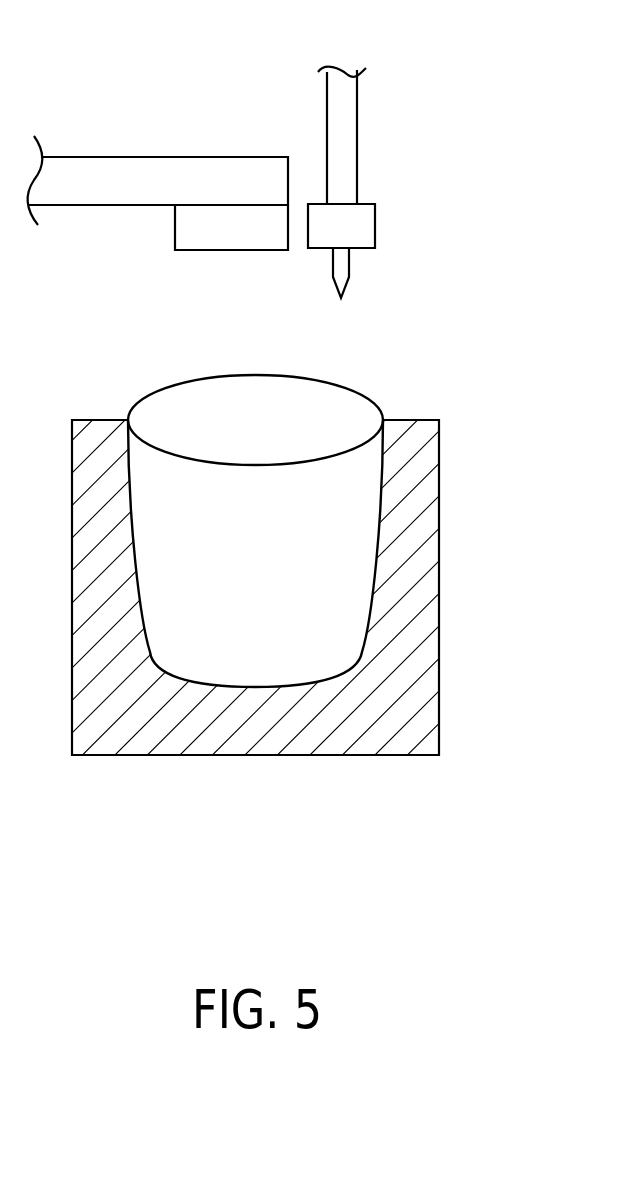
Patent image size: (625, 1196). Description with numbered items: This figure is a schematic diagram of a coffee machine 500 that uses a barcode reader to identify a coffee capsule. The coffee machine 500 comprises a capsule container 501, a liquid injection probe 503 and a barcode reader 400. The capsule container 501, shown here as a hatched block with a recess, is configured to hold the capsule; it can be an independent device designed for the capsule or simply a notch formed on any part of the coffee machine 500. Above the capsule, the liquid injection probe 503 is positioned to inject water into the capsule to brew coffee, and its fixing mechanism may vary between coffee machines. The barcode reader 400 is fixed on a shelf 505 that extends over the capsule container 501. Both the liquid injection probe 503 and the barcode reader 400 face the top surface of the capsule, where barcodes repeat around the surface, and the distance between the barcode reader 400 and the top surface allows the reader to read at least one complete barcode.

The coffee machine 500 is at (418, 90).
The shelf 505 is at (142, 170).
The barcode reader 400 is at (253, 241).
The liquid injection probe 503 is at (352, 268).
The capsule container 501 is at (443, 396).